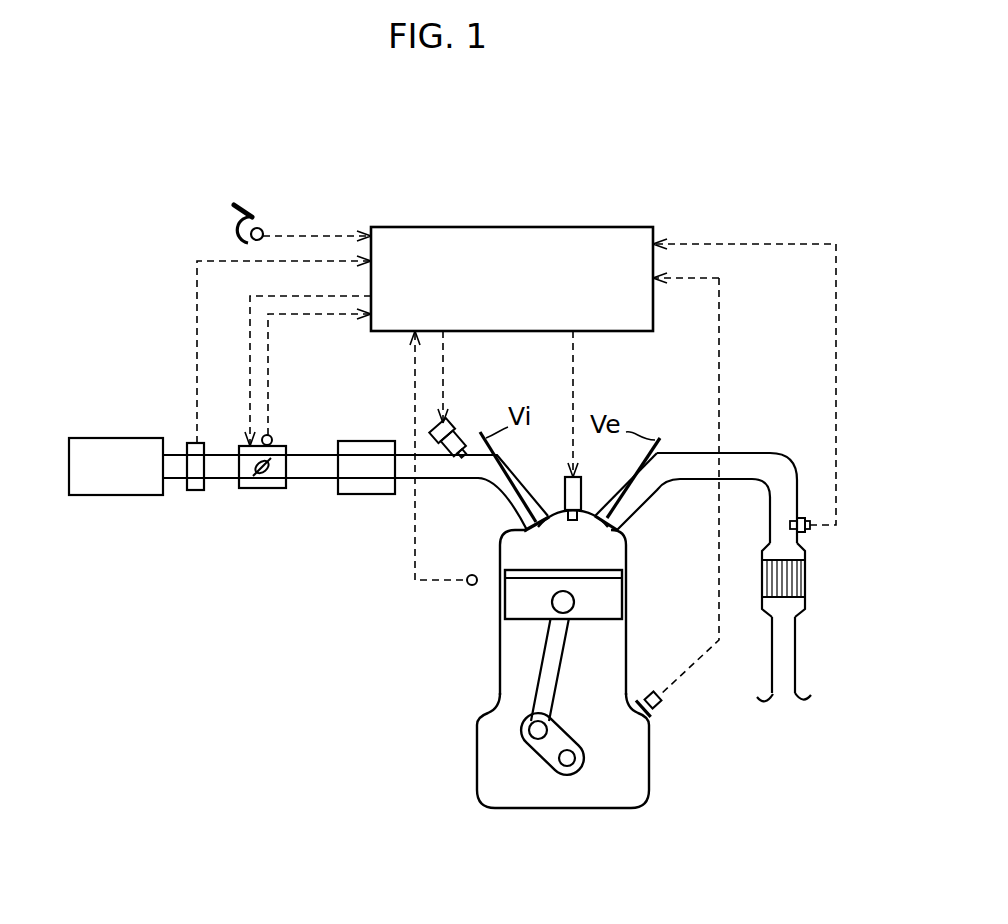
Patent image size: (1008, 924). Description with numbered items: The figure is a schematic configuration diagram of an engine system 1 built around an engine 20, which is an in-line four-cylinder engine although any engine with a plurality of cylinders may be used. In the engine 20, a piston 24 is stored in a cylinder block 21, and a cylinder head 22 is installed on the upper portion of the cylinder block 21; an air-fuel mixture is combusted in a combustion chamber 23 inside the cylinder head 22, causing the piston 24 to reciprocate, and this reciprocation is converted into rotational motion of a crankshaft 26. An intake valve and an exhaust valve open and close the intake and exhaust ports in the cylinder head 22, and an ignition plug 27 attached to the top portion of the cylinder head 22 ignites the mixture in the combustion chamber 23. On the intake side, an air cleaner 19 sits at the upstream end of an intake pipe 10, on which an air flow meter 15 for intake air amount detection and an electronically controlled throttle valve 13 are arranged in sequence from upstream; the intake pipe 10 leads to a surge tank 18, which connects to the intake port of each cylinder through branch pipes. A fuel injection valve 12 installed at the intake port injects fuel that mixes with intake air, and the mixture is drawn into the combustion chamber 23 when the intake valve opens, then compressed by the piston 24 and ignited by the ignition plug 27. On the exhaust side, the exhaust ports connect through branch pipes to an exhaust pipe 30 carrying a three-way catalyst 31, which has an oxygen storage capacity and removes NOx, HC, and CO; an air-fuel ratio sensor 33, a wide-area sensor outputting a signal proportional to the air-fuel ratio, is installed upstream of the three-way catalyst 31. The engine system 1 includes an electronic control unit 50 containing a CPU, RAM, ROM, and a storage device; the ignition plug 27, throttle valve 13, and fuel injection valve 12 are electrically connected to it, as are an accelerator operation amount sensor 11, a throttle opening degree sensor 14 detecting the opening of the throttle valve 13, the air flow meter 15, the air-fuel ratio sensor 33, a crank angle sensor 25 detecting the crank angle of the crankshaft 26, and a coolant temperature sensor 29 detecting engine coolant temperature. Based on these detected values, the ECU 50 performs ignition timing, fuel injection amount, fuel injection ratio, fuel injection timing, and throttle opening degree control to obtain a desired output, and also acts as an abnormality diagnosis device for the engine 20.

The engine system 1 is at (845, 226).
The intake pipe 10 is at (325, 455).
The accelerator operation amount sensor 11 is at (262, 229).
The fuel injection valve 12 is at (460, 434).
The throttle valve 13 is at (270, 488).
The throttle opening degree sensor 14 is at (270, 435).
The air flow meter 15 is at (195, 490).
The surge tank 18 is at (355, 441).
The air cleaner 19 is at (113, 438).
The engine 20 is at (467, 667).
The cylinder block 21 is at (495, 747).
The cylinder head 22 is at (626, 535).
The combustion chamber 23 is at (597, 556).
The piston 24 is at (612, 610).
The crank angle sensor 25 is at (658, 708).
The crankshaft 26 is at (567, 767).
The ignition plug 27 is at (583, 482).
The coolant temperature sensor 29 is at (472, 586).
The exhaust pipe 30 is at (740, 453).
The three-way catalyst 31 is at (805, 575).
The air-fuel ratio sensor 33 is at (803, 516).
The electronic control unit (ECU) 50 is at (653, 227).